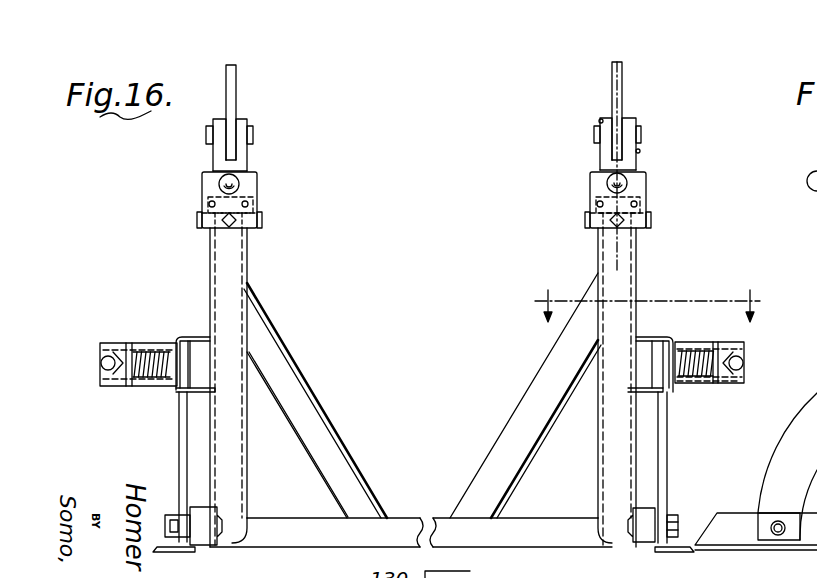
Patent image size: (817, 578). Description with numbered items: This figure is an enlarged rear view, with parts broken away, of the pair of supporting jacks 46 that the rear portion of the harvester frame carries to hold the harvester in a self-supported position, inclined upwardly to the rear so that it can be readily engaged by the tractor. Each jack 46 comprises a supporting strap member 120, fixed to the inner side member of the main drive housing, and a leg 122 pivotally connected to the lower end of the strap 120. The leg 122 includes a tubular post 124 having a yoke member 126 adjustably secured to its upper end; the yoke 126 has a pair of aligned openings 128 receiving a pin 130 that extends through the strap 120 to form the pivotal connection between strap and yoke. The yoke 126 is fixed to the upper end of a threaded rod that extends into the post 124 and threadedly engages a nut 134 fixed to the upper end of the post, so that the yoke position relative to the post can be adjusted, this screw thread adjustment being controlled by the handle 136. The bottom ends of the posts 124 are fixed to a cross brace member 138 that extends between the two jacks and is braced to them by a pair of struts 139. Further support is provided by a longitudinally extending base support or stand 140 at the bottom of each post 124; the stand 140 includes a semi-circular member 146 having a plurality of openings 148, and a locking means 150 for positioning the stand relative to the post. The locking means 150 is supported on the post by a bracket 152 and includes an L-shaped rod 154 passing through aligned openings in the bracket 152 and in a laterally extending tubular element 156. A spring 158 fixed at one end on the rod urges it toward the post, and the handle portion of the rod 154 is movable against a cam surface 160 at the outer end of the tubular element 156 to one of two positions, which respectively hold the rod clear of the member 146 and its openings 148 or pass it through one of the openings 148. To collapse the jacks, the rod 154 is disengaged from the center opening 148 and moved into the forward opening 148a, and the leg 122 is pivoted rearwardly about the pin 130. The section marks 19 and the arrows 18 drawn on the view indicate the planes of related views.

The support post 18 is at (628, 100).
The section line 19 is at (649, 306).
The supporting jack 46 is at (384, 412).
The supporting strap member 120 is at (237, 92).
The leg 122 is at (252, 262).
The tubular post 124 is at (231, 430).
The yoke member 126 is at (212, 155).
The aligned openings 128 is at (600, 119).
The pin 130 is at (254, 136).
The nut 134 is at (590, 186).
The handle 136 is at (629, 185).
The cross brace member 138 is at (522, 517).
The strut 139 is at (340, 467).
The base support or stand 140 is at (684, 507).
The semi-circular member 146 is at (179, 432).
The openings 148 is at (663, 398).
The forward opening 148a is at (658, 453).
The locking means 150 is at (138, 340).
The bracket 152 is at (205, 340).
The L-shaped rod 154 is at (101, 361).
The tubular element 156 is at (707, 386).
The spring 158 is at (693, 386).
The cam surface 160 is at (745, 370).